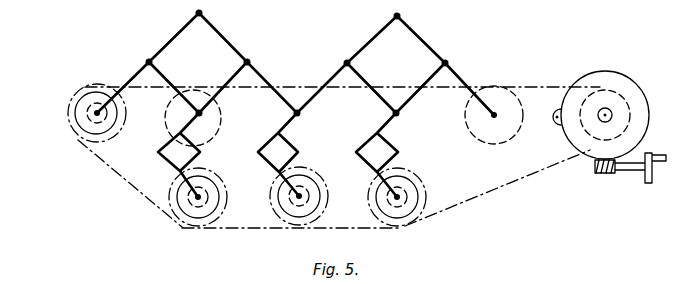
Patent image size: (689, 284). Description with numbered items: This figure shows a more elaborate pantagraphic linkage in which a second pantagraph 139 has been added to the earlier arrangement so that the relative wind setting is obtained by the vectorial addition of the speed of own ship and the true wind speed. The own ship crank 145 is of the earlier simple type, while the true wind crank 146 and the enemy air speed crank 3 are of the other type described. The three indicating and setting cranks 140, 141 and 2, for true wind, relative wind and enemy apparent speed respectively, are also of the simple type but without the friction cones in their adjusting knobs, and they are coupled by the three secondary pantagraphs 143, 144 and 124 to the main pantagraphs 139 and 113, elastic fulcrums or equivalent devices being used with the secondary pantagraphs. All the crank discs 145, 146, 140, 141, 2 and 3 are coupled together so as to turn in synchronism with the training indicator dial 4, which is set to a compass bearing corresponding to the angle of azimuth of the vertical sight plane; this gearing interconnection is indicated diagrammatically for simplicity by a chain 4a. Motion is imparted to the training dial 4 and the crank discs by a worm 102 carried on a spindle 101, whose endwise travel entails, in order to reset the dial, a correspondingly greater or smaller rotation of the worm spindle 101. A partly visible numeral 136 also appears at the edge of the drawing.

The enemy apparent speed crank 2 is at (405, 210).
The enemy air speed crank 3 is at (500, 93).
The training indicator dial 4 is at (607, 83).
The chain 4a is at (472, 200).
The worm spindle 101 is at (637, 171).
The worm 102 is at (598, 175).
The main pantagraph 113 is at (427, 43).
The secondary pantagraph 124 is at (398, 152).
The part 136 is at (242, 282).
The second pantagraph 139 is at (167, 38).
The true wind indicating and setting crank 140 is at (192, 215).
The relative wind indicating and setting crank 141 is at (290, 215).
The secondary pantagraph 143 is at (200, 152).
The secondary pantagraph 144 is at (298, 152).
The own ship crank 145 is at (82, 133).
The true wind crank 146 is at (199, 97).